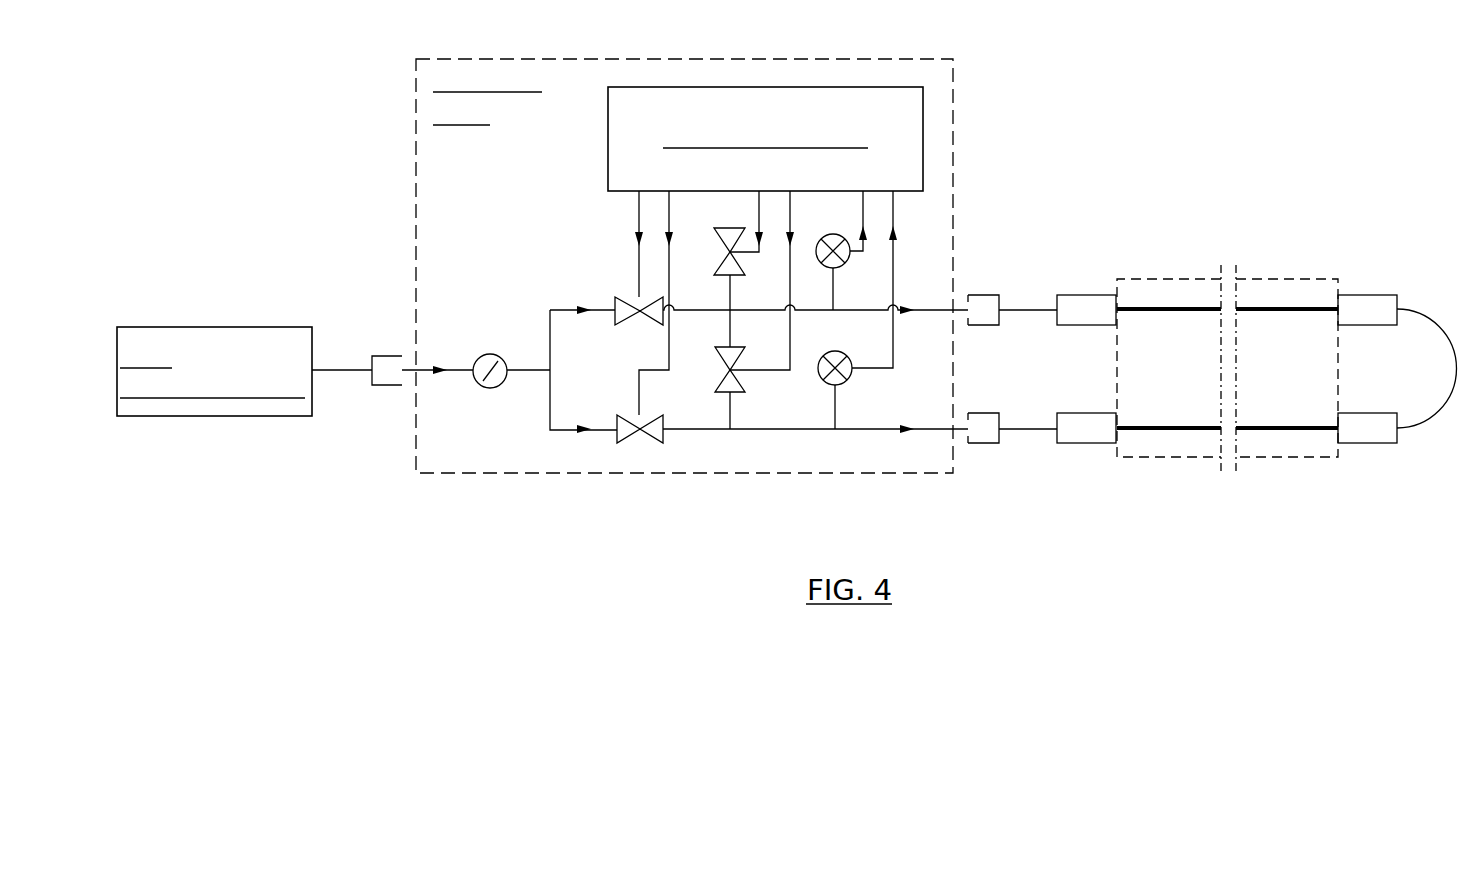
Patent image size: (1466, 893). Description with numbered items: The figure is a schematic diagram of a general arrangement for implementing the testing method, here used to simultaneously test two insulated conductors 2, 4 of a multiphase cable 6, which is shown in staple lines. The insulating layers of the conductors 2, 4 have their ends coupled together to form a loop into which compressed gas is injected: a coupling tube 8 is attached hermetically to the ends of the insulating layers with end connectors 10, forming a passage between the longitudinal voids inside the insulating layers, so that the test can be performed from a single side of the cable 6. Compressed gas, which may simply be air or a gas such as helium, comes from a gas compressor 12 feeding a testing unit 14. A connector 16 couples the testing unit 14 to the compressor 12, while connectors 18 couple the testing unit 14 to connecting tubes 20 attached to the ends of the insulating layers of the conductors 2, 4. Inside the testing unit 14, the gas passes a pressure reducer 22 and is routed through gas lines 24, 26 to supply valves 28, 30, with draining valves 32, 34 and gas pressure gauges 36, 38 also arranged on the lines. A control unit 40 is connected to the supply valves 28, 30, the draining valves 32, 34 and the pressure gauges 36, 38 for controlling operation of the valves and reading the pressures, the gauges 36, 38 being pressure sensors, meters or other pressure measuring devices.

The insulated conductor 2 is at (1167, 430).
The insulated conductor 4 is at (1142, 309).
The multiphase cable 6 is at (1263, 279).
The coupling tube 8 is at (1440, 327).
The end connectors 10 is at (1372, 295).
The gas compressor 12 is at (180, 416).
The testing unit 14 is at (552, 62).
The connector 16 is at (382, 356).
The connectors 18 is at (985, 295).
The connecting tubes 20 is at (1073, 295).
The pressure reducer 22 is at (480, 386).
The gas line 24 is at (550, 408).
The gas line 26 is at (550, 340).
The supply valve 28 is at (620, 440).
The supply valve 30 is at (618, 300).
The draining valve 32 is at (718, 392).
The draining valve 34 is at (717, 230).
The gas pressure gauge 36 is at (826, 384).
The gas pressure gauge 38 is at (853, 258).
The control unit 40 is at (728, 92).